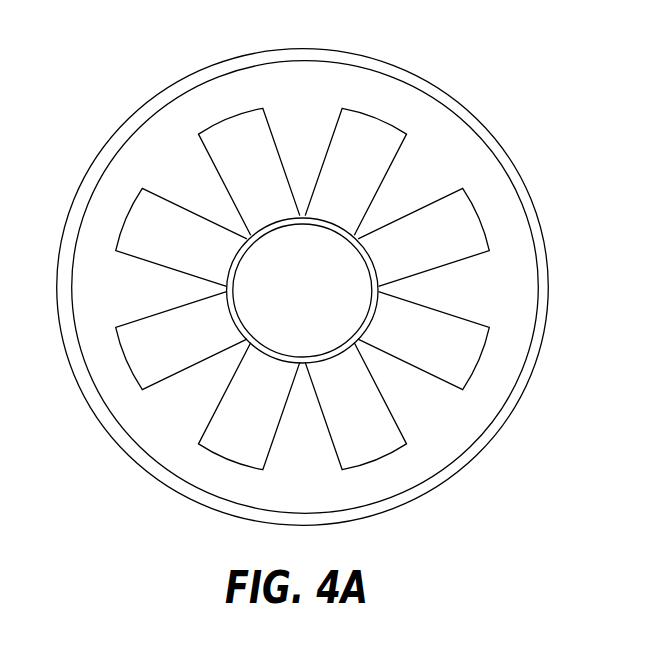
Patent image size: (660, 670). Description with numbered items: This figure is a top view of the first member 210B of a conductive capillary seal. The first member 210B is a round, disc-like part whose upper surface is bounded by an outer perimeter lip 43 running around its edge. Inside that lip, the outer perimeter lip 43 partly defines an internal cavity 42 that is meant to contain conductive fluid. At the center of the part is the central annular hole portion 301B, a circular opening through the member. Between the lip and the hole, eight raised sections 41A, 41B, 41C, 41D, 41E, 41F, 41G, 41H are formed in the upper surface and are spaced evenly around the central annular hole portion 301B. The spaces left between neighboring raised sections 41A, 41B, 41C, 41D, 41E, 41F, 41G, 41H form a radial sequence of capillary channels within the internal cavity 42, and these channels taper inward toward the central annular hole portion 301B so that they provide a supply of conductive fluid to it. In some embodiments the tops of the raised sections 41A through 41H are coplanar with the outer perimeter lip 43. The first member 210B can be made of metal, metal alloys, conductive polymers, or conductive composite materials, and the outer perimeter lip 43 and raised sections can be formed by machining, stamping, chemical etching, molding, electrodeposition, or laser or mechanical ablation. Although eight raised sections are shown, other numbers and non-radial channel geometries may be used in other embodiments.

The first member 210B is at (123, 107).
The internal cavity 42 is at (315, 96).
The outer perimeter lip 43 is at (505, 400).
The central annular hole portion 301B is at (332, 308).
The raised section 41A is at (377, 177).
The raised section 41B is at (447, 253).
The raised section 41C is at (438, 350).
The raised section 41D is at (371, 420).
The raised section 41E is at (270, 428).
The raised section 41F is at (202, 350).
The raised section 41G is at (200, 252).
The raised section 41H is at (271, 180).